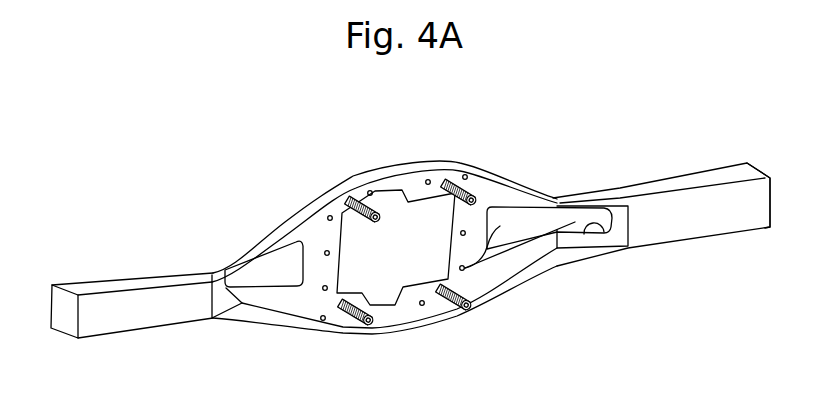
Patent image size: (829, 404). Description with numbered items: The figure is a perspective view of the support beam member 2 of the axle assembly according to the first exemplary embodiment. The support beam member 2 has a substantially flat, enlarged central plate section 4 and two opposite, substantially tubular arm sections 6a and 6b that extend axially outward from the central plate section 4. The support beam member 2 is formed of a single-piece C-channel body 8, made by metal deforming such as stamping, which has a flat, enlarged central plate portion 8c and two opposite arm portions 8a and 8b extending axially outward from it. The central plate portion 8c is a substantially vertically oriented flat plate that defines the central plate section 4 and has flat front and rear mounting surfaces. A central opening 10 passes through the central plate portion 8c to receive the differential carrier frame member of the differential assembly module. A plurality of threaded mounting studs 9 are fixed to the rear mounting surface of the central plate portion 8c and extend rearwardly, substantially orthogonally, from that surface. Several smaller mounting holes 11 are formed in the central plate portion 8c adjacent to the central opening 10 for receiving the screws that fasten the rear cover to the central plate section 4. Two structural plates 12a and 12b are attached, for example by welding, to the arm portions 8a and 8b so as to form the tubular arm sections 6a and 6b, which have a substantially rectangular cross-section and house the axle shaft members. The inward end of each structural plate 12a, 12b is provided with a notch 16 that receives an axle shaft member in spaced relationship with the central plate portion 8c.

The support beam member 2 is at (412, 227).
The central plate section 4 is at (388, 170).
The tubular arm section 6a is at (669, 204).
The tubular arm section 6b is at (120, 294).
The C-channel body 8 is at (510, 300).
The arm portion 8a is at (727, 160).
The arm portion 8b is at (65, 313).
The central plate portion 8c is at (415, 303).
The threaded mounting studs 9 is at (356, 198).
The central opening 10 is at (448, 236).
The mounting holes 11 is at (466, 234).
The structural plate 12a is at (716, 224).
The structural plate 12b is at (133, 318).
The notch 16 is at (607, 234).